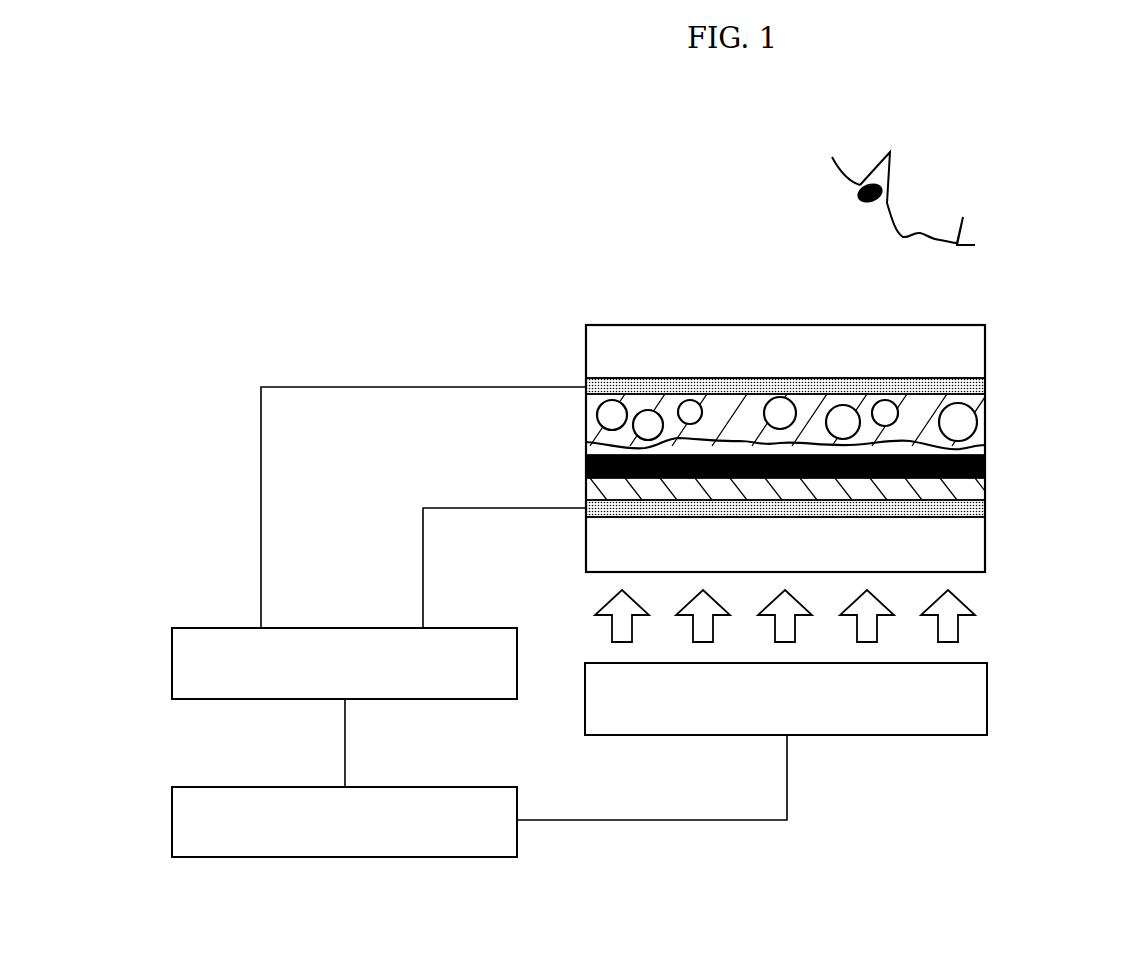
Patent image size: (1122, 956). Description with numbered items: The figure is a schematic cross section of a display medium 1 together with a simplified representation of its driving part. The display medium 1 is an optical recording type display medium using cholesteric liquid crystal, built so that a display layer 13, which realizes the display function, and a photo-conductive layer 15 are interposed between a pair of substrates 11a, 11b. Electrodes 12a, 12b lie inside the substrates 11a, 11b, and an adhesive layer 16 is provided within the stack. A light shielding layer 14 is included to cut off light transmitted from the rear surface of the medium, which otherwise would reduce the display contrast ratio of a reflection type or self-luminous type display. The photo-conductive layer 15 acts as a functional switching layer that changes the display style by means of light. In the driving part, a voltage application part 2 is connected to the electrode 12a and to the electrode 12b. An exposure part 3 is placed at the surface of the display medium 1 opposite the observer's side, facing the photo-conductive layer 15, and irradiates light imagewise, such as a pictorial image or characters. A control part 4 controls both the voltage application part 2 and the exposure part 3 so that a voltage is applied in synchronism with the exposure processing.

The display medium 1 is at (566, 332).
The voltage application part 2 is at (172, 662).
The exposure part 3 is at (910, 735).
The control part 4 is at (172, 822).
The substrate 11a is at (972, 347).
The substrate 11b is at (977, 543).
The electrode 12a is at (977, 382).
The electrode 12b is at (977, 510).
The display layer 13 is at (977, 402).
The light shielding layer 14 is at (986, 465).
The photo-conductive layer 15 is at (977, 490).
The adhesive layer 16 is at (978, 452).